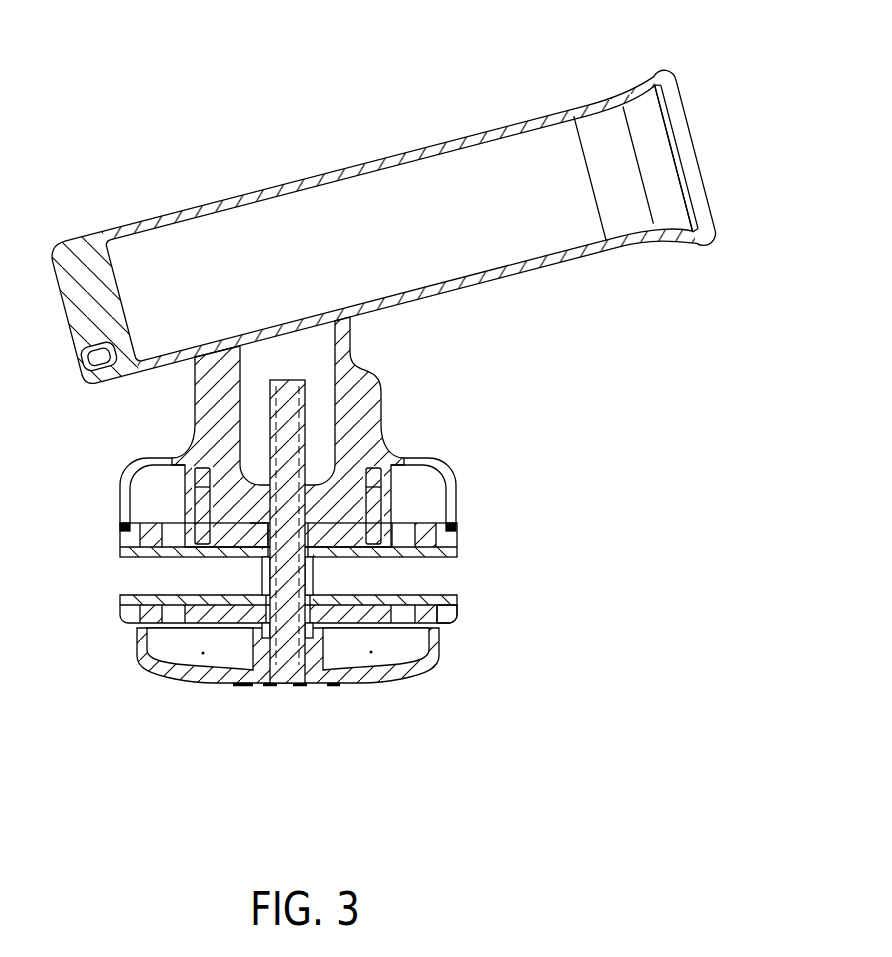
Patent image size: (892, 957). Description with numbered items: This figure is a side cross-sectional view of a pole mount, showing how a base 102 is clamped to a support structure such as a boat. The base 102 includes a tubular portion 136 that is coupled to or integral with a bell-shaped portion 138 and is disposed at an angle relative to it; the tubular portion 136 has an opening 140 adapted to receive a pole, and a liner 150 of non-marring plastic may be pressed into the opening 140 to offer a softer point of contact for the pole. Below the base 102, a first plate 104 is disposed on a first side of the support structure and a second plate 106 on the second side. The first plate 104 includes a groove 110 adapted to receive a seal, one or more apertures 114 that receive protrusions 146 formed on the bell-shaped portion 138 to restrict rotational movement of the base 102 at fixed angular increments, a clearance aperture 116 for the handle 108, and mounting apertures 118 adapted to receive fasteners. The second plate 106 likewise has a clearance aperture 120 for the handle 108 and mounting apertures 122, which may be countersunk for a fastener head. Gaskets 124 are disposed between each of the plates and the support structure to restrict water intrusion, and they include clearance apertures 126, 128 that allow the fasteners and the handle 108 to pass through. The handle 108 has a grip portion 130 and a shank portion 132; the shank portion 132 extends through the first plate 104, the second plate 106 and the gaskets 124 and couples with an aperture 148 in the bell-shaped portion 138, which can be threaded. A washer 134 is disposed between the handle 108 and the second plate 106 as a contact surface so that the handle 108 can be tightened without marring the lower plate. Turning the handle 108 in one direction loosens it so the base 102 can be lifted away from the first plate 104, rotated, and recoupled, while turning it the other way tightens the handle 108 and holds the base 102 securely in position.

The base 102 is at (420, 207).
The first plate 104 is at (305, 557).
The second plate 106 is at (275, 644).
The handle 108 is at (288, 685).
The groove 110 is at (127, 528).
The apertures 114 is at (367, 548).
The clearance aperture 116 is at (267, 530).
The mounting apertures 118 is at (147, 543).
The clearance aperture 120 is at (260, 625).
The mounting apertures 122 is at (433, 613).
The gaskets 124 is at (460, 551).
The clearance apertures 126 is at (150, 600).
The clearance apertures 128 is at (310, 550).
The grip portion 130 is at (288, 702).
The shank portion 132 is at (293, 402).
The washer 134 is at (260, 627).
The tubular portion 136 is at (320, 217).
The bell-shaped portion 138 is at (352, 330).
The opening 140 is at (692, 163).
The protrusions 146 is at (205, 495).
The aperture 148 is at (310, 510).
The liner 150 is at (602, 137).